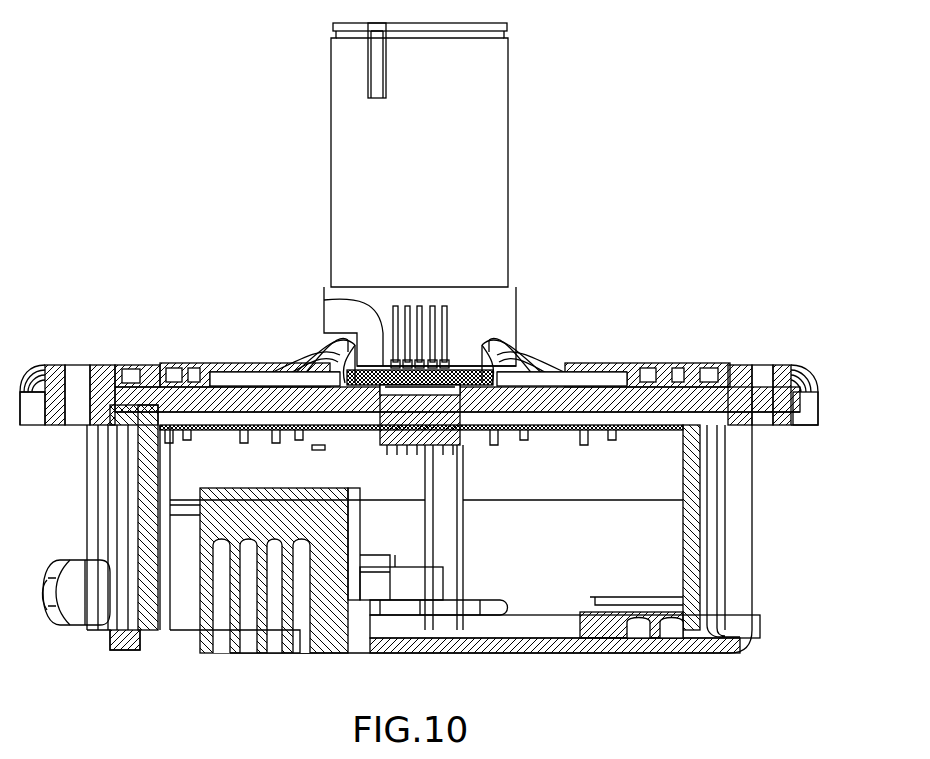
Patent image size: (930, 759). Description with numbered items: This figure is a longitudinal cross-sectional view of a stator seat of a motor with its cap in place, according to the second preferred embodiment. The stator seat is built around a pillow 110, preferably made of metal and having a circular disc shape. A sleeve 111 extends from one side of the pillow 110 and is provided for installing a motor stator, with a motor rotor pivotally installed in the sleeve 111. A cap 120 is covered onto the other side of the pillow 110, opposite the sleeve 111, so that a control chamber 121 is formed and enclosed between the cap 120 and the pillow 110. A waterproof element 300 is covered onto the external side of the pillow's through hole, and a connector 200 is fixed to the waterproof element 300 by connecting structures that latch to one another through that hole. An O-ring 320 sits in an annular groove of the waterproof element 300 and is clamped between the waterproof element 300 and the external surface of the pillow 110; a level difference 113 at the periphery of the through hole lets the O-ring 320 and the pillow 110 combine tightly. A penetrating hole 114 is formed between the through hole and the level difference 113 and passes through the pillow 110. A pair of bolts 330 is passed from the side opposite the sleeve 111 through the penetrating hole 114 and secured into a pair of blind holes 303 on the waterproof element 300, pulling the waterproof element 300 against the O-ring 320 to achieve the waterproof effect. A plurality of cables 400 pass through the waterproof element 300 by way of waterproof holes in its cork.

The pillow 110 is at (238, 262).
The sleeve 111 is at (492, 153).
The level difference 113 is at (305, 362).
The penetrating hole 114 is at (332, 352).
The cap 120 is at (762, 598).
The control chamber 121 is at (607, 410).
The connector 200 is at (378, 402).
The waterproof element 300 is at (385, 358).
The blind hole 303 is at (510, 358).
The O-ring 320 is at (520, 362).
The bolt 330 is at (478, 400).
The cable 400 is at (448, 318).